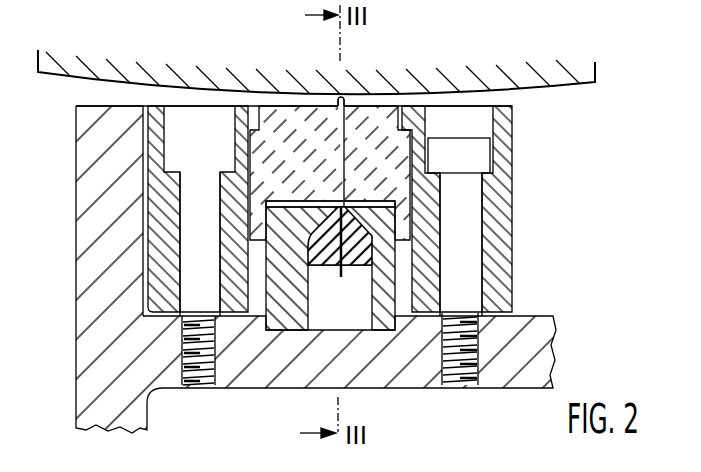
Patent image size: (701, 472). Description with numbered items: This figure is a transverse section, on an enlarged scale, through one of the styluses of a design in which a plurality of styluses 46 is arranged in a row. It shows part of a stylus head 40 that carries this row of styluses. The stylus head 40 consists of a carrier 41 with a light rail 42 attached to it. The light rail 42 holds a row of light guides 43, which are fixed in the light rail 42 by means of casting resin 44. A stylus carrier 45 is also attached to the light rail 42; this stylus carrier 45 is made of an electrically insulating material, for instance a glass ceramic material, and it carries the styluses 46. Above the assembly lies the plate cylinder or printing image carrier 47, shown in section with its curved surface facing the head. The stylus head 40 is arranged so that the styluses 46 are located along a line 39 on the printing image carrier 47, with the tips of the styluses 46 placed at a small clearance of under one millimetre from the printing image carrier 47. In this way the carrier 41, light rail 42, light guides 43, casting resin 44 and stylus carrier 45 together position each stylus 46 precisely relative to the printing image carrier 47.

The line 39 is at (338, 91).
The stylus head 40 is at (58, 371).
The carrier 41 is at (530, 357).
The light rail 42 is at (290, 318).
The light guides 43 is at (345, 272).
The casting resin 44 is at (330, 252).
The stylus carrier 45 is at (387, 128).
The styluses 46 is at (347, 104).
The printing image carrier 47 is at (522, 80).